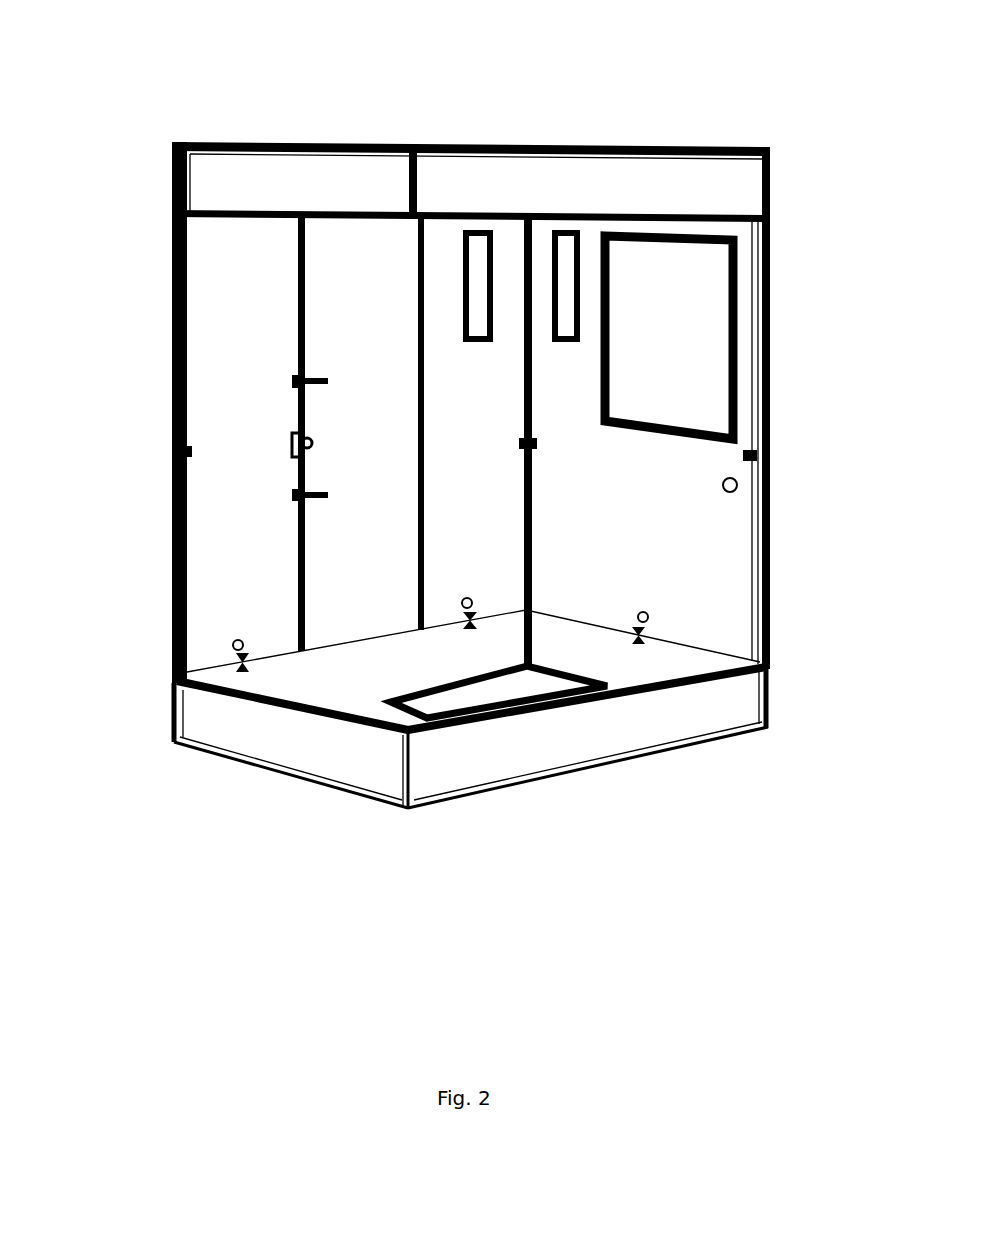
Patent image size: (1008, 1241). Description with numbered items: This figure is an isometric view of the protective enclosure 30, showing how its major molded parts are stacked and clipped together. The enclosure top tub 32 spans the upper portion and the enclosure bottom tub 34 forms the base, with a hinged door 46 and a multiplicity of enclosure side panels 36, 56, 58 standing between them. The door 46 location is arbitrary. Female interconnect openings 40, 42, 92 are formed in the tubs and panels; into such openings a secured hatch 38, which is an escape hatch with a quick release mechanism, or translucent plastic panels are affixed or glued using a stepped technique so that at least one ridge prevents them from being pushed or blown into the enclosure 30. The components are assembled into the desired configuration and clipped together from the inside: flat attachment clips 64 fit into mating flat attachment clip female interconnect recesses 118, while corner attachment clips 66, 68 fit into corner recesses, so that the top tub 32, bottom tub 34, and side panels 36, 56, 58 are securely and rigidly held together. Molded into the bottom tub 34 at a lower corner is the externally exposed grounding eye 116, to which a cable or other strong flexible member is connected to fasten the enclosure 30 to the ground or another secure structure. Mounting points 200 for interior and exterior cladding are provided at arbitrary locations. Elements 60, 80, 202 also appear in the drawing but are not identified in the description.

The protective enclosure 30 is at (248, 57).
The enclosure top tub 32 is at (237, 195).
The enclosure bottom tub 34 is at (217, 720).
The enclosure side panel 36 is at (690, 517).
The secured hatch 38 is at (688, 335).
The female interconnect opening 40 is at (517, 197).
The female interconnect opening 42 is at (420, 200).
The hinged door 46 is at (345, 296).
The enclosure side panel 56 is at (465, 528).
The enclosure side panel 58 is at (257, 511).
The latch 60 is at (300, 441).
The flat attachment clip 64 is at (230, 656).
The corner attachment clip 66 is at (537, 446).
The corner attachment clip 68 is at (178, 450).
The hinge 80 is at (352, 438).
The female interconnect opening 92 is at (522, 692).
The grounding eye 116 is at (384, 806).
The flat attachment clip female interconnect recess 118 is at (297, 712).
The mounting point 200 is at (239, 639).
The handle 202 is at (738, 484).